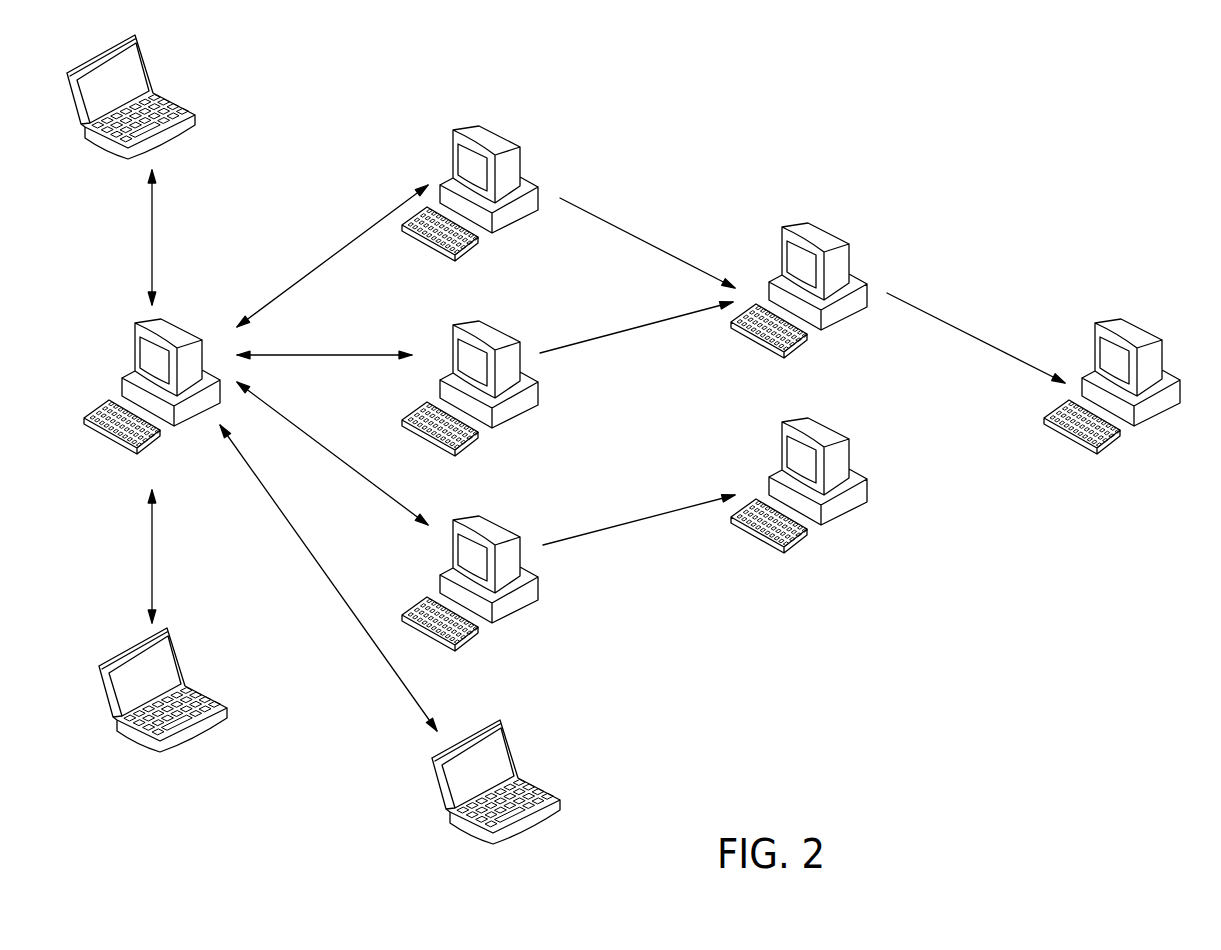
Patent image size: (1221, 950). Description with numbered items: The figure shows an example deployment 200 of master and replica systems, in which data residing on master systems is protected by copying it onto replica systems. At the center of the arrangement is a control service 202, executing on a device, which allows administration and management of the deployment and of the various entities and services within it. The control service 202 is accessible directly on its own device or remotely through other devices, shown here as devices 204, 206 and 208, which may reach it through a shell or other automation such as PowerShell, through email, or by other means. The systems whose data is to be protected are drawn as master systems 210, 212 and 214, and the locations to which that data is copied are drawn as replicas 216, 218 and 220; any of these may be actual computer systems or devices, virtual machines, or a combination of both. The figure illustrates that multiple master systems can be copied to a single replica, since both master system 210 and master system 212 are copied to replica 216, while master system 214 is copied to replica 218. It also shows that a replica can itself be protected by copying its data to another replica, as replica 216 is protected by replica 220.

The deployment 200 is at (978, 142).
The control service 202 is at (188, 333).
The device 204 is at (175, 100).
The device 206 is at (207, 693).
The device 208 is at (538, 787).
The master system 210 is at (509, 138).
The master system 212 is at (509, 333).
The master system 214 is at (509, 528).
The replica 216 is at (838, 235).
The replica 218 is at (838, 430).
The replica 220 is at (1148, 333).